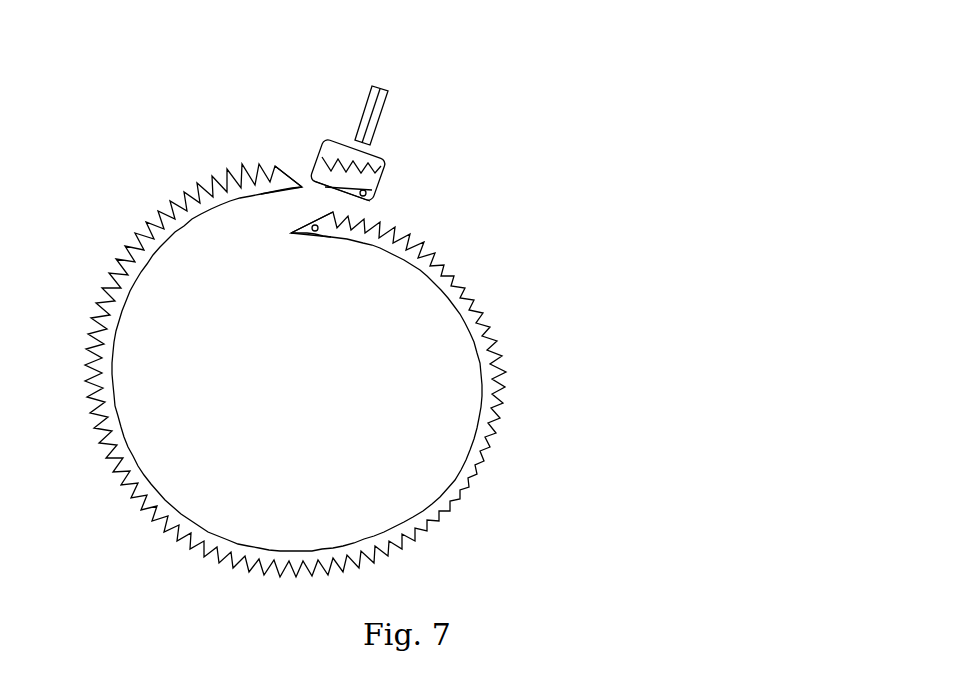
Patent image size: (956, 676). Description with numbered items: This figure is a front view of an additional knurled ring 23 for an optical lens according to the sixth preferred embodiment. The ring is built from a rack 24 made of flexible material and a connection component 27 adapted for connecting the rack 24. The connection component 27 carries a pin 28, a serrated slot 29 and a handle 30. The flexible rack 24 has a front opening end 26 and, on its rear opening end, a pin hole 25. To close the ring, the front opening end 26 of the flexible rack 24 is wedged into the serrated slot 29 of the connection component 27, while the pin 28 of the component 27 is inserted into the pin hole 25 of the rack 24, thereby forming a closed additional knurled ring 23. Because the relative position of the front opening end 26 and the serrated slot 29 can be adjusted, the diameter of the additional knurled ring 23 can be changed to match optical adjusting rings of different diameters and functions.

The additional knurled ring 23 is at (523, 494).
The rack 24 is at (488, 407).
The pin hole 25 is at (312, 248).
The front opening end 26 is at (258, 155).
The connection component 27 is at (318, 132).
The pin 28 is at (382, 207).
The serrated slot 29 is at (358, 180).
The handle 30 is at (384, 123).